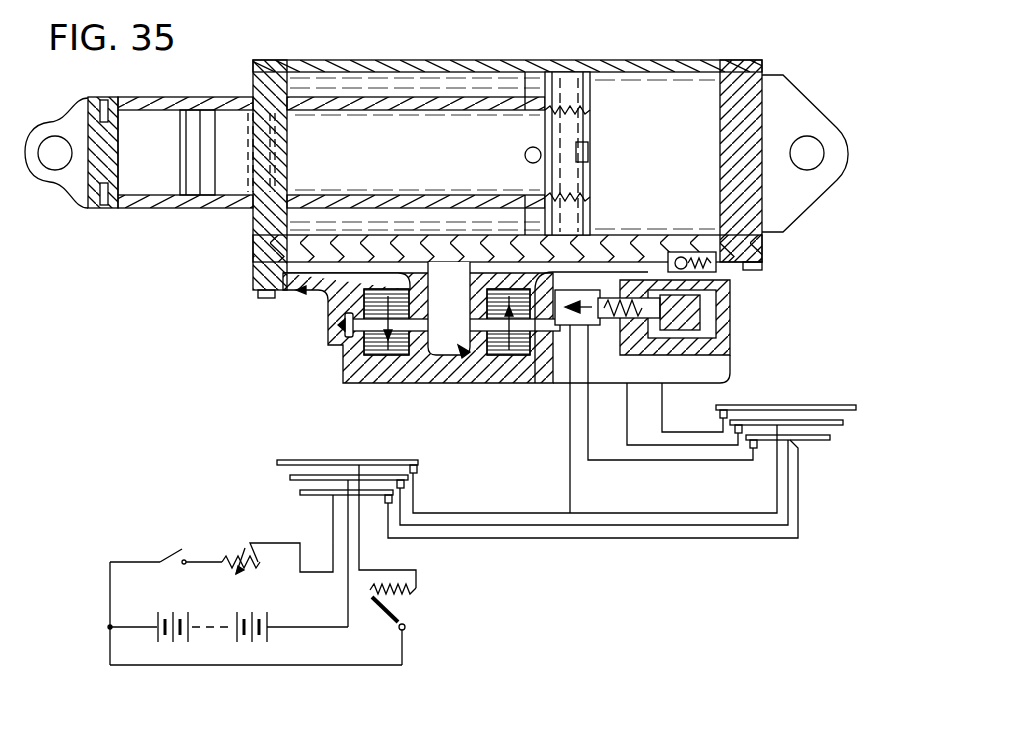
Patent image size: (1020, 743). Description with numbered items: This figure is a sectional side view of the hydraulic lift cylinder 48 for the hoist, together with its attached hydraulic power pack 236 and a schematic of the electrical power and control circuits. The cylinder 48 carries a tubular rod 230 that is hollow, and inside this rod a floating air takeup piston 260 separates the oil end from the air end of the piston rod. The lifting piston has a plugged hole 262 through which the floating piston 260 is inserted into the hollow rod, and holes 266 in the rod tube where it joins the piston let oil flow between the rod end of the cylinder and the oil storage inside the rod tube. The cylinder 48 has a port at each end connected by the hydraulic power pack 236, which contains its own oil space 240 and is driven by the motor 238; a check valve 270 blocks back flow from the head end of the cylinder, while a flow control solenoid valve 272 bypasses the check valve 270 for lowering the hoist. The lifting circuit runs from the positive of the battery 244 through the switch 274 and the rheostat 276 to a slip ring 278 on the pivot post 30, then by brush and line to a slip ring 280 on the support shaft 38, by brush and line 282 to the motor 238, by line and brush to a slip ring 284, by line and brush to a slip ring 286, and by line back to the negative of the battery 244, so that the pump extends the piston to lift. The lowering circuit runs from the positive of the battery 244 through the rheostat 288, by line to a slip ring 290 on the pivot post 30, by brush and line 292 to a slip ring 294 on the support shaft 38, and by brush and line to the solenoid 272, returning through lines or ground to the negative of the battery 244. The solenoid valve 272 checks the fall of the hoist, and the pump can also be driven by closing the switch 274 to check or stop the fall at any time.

The lift cylinder 48 is at (668, 60).
The tubular rod 230 is at (142, 97).
The floating air takeup piston 260 is at (175, 183).
The holes 266 is at (530, 117).
The plugged hole 262 is at (592, 122).
The hydraulic power pack 236 is at (342, 362).
The oil chamber 240 is at (450, 362).
The motor 238 is at (728, 356).
The flow control solenoid valve 272 is at (700, 293).
The check valve 270 is at (716, 258).
The support shaft 38 is at (729, 413).
The slip ring 280 is at (806, 405).
The slip ring 284 is at (838, 427).
The slip ring 294 is at (755, 452).
The brush and line 282 is at (670, 392).
The pivot post 30 is at (501, 476).
The slip ring 290 is at (420, 463).
The slip ring 286 is at (290, 477).
The slip ring 278 is at (335, 512).
The brush and line 292 is at (528, 513).
The switch 274 is at (166, 557).
The rheostat 276 is at (250, 550).
The battery 244 is at (178, 622).
The rheostat 288 is at (406, 622).